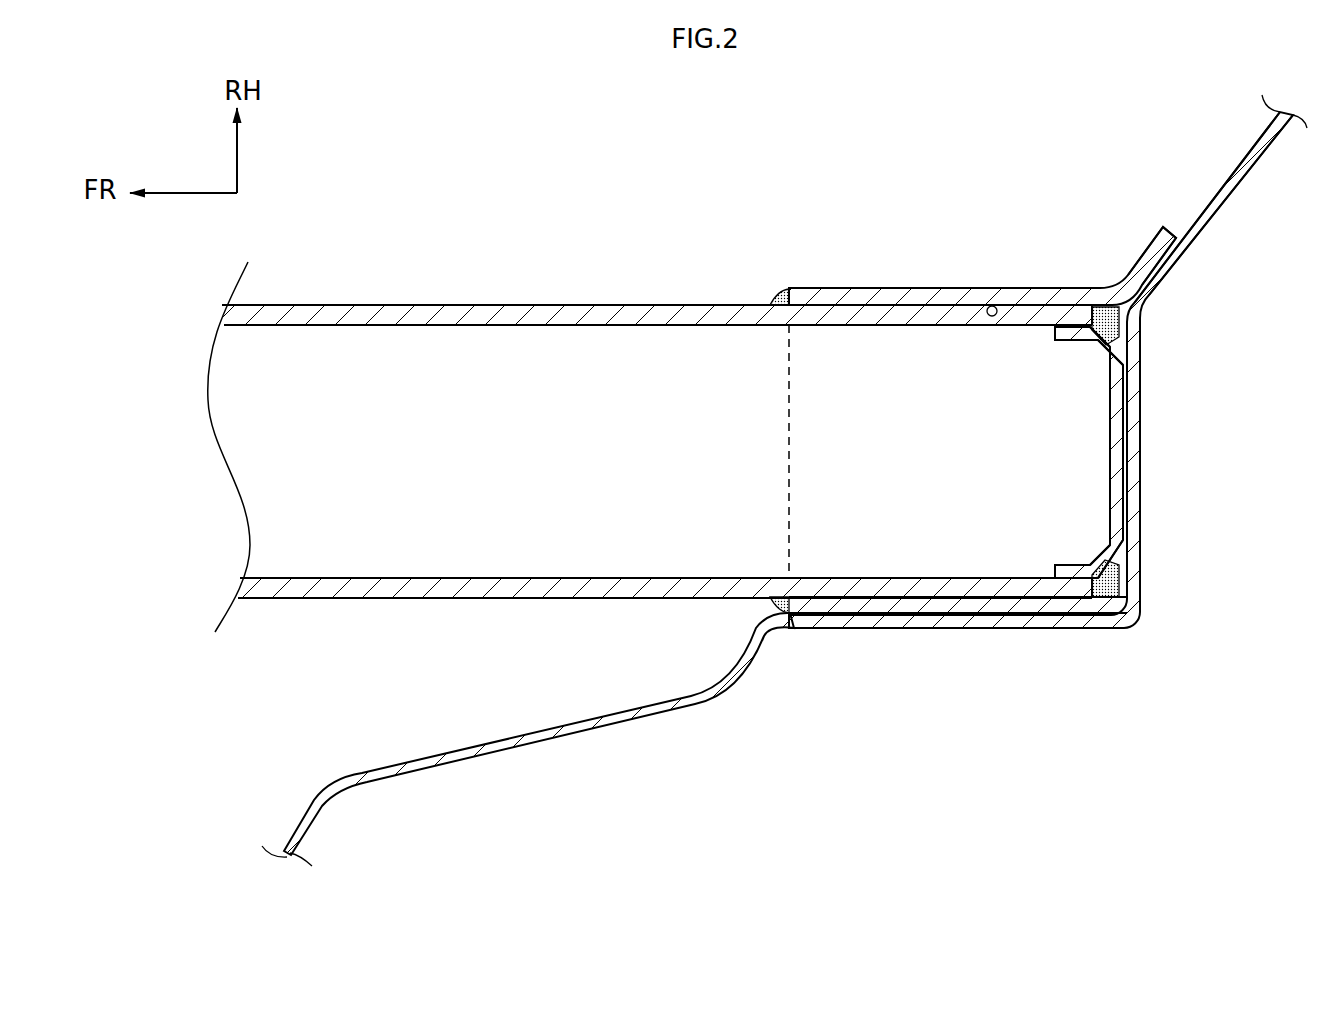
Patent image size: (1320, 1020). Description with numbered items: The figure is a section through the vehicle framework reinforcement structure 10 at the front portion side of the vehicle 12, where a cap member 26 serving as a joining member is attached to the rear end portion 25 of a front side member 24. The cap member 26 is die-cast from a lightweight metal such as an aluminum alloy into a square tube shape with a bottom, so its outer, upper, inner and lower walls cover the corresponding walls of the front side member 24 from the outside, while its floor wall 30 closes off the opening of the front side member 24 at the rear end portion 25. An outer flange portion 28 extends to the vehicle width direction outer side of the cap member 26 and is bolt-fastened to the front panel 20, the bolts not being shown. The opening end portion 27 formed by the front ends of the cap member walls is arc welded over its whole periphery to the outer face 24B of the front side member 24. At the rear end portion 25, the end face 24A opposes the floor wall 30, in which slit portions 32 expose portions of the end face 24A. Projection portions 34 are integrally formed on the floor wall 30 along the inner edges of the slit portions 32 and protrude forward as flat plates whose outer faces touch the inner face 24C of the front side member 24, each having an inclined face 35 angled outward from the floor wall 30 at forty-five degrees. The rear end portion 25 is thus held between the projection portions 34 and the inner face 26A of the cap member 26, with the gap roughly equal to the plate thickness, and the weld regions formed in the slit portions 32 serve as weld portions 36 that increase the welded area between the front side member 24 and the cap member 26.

The vehicle framework reinforcement structure 10 is at (1086, 416).
The vehicle 12 is at (370, 768).
The front panel 20 is at (1228, 178).
The front side member 24 is at (520, 303).
The end face 24A is at (1105, 304).
The outer face 24B is at (672, 303).
The inner face 24C is at (960, 327).
The rear end portion 25 is at (990, 617).
The cap member 26 is at (891, 286).
The inner face of cap member 26A is at (992, 306).
The opening end portion 27 is at (780, 290).
The outer flange portion 28 is at (1160, 226).
The floor wall 30 is at (1141, 425).
The slit portion 32 is at (1147, 314).
The projection portion 34 is at (1057, 342).
The inclined face 35 is at (1132, 352).
The weld portion 36 is at (1128, 334).